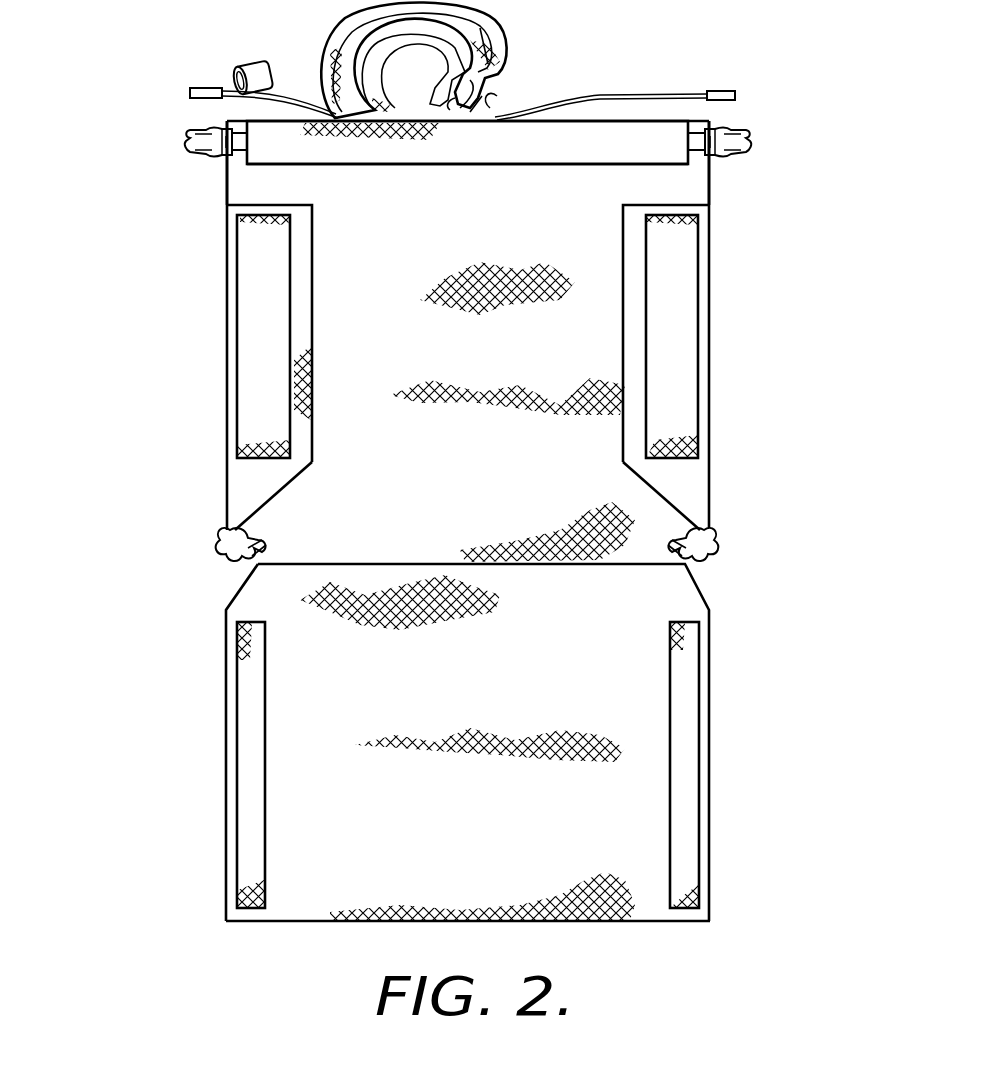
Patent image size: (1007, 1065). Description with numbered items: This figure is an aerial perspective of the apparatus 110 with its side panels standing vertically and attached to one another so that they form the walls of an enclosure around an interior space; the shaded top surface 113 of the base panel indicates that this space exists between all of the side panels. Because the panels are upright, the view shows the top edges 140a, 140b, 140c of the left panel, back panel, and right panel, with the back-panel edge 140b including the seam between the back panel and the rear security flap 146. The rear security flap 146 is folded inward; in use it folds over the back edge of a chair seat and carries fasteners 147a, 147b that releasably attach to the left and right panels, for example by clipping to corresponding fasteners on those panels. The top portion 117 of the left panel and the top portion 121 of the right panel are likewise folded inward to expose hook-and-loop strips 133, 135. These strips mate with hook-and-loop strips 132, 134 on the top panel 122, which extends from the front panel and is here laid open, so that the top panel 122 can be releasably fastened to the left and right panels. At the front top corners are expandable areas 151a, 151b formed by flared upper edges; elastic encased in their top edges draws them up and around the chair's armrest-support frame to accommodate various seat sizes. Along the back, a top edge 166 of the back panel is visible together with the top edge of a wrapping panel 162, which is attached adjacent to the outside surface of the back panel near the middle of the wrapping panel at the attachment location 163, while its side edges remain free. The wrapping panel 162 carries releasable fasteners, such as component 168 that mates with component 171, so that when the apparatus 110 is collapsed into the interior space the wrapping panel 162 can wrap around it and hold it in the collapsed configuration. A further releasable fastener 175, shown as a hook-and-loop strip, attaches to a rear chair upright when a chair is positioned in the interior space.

The apparatus 110 is at (132, 280).
The top surface of the base panel 113 is at (513, 358).
The top portion of left panel 117 is at (698, 480).
The top portion of right panel 121 is at (237, 483).
The top panel 122 is at (565, 922).
The hook-and-loop strip 132 is at (693, 800).
The hook-and-loop strip 133 is at (687, 350).
The hook-and-loop strip 134 is at (247, 805).
The hook-and-loop strip 135 is at (247, 390).
The top edge of left panel 140a is at (713, 178).
The back-panel edge 140b is at (628, 118).
The top edge of right panel 140c is at (226, 180).
The rear security flap 146 is at (387, 153).
The fastener 147a is at (728, 128).
The fastener 147b is at (205, 128).
The expandable area 151a is at (716, 562).
The expandable area 151b is at (218, 553).
The wrapping panel 162 is at (301, 92).
The attachment location 163 is at (472, 134).
The top edge of the back panel 166 is at (567, 165).
The releasable fastener 168 is at (722, 91).
The releasable fastener 171 is at (204, 91).
The releasable fastener 175 is at (251, 62).